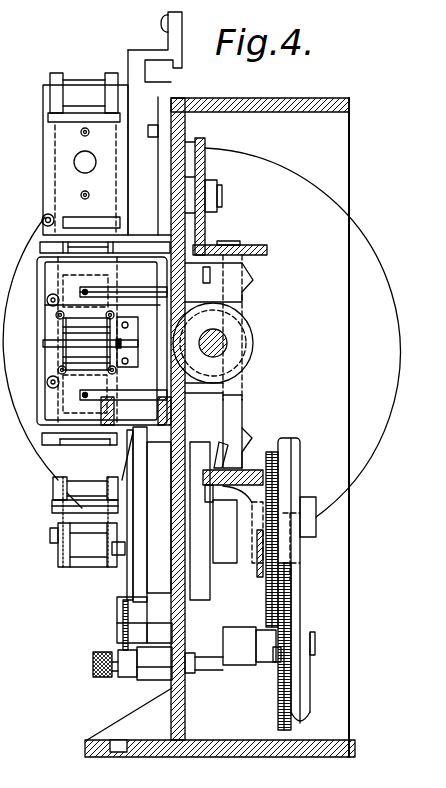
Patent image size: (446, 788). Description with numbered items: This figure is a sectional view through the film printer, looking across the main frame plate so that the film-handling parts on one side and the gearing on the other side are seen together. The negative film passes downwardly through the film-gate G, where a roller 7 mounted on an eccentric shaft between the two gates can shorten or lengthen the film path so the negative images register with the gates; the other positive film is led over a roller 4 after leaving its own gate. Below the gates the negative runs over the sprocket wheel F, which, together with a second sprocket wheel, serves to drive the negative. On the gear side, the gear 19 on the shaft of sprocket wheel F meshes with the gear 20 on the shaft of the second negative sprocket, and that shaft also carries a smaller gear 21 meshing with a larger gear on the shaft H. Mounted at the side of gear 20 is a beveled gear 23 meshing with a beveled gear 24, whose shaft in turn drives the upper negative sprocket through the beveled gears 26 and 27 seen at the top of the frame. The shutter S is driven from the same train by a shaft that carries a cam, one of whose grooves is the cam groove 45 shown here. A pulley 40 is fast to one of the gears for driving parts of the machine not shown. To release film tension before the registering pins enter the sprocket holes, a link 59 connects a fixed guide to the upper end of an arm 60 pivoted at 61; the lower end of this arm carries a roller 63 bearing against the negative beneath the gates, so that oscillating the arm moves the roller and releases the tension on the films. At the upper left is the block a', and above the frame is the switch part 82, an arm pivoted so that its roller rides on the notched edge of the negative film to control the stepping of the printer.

The switch part 82 is at (143, 98).
The magnet block a' is at (68, 154).
The shutter S is at (349, 192).
The beveled gear 27 is at (207, 236).
The beveled gear 26 is at (267, 252).
The cam groove 45 is at (253, 343).
The film-gate G is at (80, 277).
The roller 7 is at (57, 342).
The roller 4 is at (72, 355).
The pivot 61 is at (103, 413).
The arm 60 is at (127, 462).
The roller 63 is at (55, 483).
The sprocket wheel F is at (63, 518).
The shaft H is at (142, 640).
The beveled gear 24 is at (251, 470).
The beveled gear 23 is at (256, 497).
The gear 20 is at (273, 465).
The gear 19 is at (278, 507).
The gear 21 is at (290, 547).
The link 59 is at (283, 700).
The pulley 40 is at (300, 690).